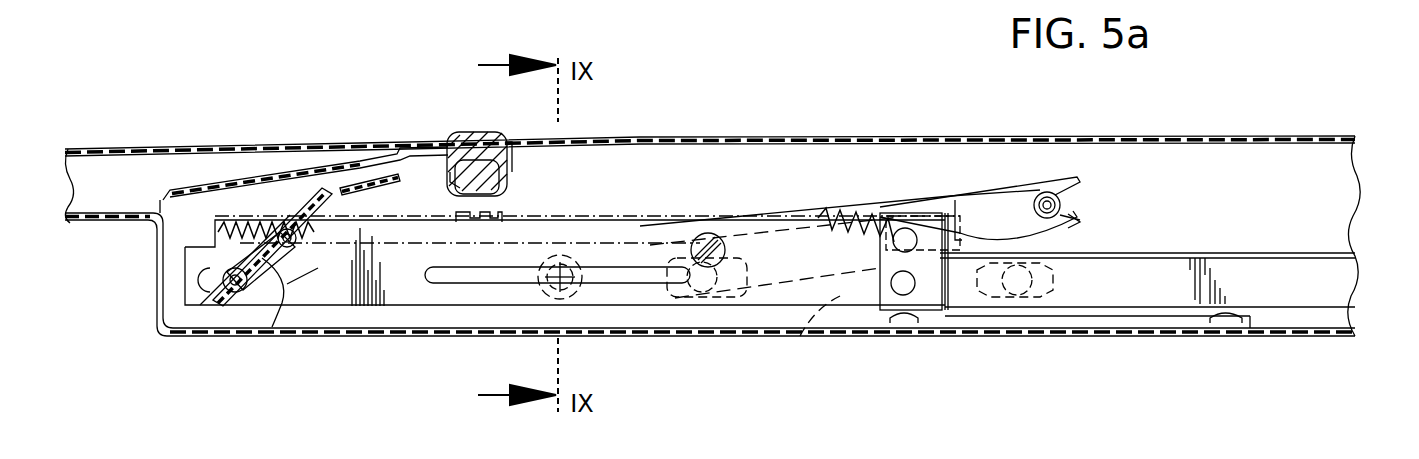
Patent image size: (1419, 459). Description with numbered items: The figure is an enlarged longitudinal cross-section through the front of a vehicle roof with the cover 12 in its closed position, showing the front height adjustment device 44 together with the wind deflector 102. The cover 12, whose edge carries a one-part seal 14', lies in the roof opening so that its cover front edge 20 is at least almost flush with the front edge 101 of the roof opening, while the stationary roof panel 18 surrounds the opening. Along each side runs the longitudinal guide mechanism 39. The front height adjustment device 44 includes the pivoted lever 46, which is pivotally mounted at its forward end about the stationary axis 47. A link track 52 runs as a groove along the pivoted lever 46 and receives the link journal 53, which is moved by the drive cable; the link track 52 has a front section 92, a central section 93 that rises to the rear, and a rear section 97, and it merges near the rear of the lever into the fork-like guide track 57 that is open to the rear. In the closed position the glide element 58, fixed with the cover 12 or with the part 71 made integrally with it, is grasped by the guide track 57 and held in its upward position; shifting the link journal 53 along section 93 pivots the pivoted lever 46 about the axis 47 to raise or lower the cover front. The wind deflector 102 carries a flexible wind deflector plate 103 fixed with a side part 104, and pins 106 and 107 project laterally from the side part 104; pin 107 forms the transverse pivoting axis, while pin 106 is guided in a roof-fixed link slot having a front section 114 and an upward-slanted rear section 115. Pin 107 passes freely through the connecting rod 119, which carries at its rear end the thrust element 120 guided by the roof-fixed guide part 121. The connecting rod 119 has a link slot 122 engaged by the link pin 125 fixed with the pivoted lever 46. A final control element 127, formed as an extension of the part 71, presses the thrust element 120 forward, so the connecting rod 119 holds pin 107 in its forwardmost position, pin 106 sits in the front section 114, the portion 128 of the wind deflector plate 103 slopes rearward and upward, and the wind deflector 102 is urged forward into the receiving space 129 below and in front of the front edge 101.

The cover 12 is at (1238, 136).
The stationary roof panel 18 is at (99, 148).
The receiving space 129 is at (183, 222).
The wind deflector 102 is at (323, 340).
The connecting rod 119 is at (418, 326).
The link slot 122 is at (630, 303).
The front section of link slot 114 is at (224, 228).
The portion of wind deflector plate 128 is at (275, 250).
The wind deflector plate 103 is at (354, 186).
The pin 106 is at (292, 250).
The pin 107 is at (235, 296).
The side part 104 is at (275, 296).
The stationary axis 47 is at (545, 300).
The link pin 125 is at (708, 232).
The front section of link track 92 is at (685, 305).
The link journal 53 is at (720, 303).
The rear section of link slot 115 is at (495, 210).
The front edge of roof opening 101 is at (454, 152).
The stop element 14' is at (480, 139).
The cover front edge 20 is at (510, 146).
The section of link track 93 is at (790, 222).
The link track 52 is at (815, 336).
The pivoted lever 46 is at (945, 210).
The rear section of link track 97 is at (992, 200).
The final control element 127 is at (955, 214).
The glide element 58 is at (1047, 202).
The guide track 57 is at (1073, 210).
The part 71 is at (1075, 226).
The thrust element 120 is at (925, 301).
The front height adjustment device 44 is at (850, 356).
The longitudinal guide mechanism 39 is at (1265, 253).
The guide part 121 is at (1114, 318).